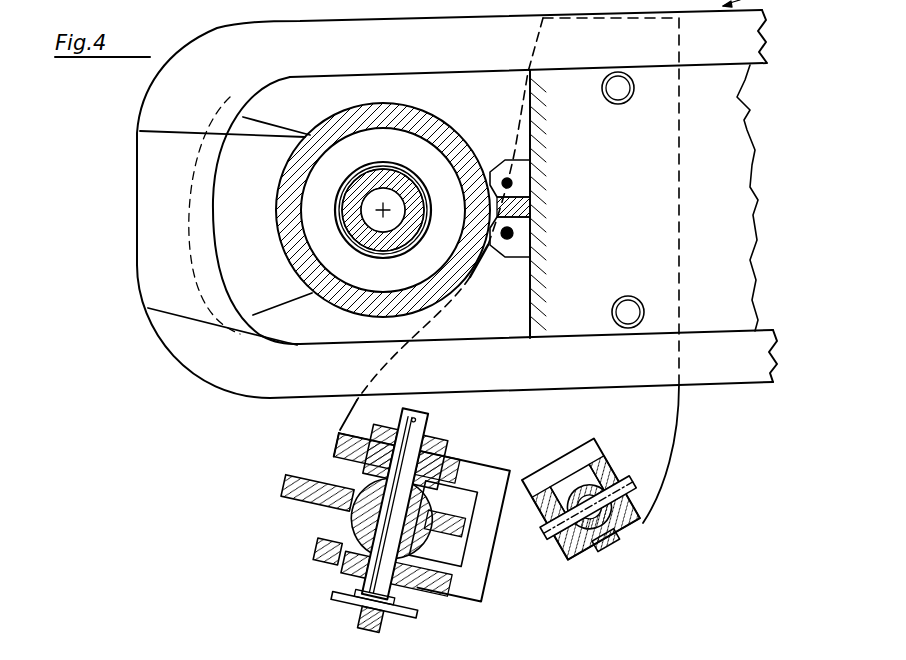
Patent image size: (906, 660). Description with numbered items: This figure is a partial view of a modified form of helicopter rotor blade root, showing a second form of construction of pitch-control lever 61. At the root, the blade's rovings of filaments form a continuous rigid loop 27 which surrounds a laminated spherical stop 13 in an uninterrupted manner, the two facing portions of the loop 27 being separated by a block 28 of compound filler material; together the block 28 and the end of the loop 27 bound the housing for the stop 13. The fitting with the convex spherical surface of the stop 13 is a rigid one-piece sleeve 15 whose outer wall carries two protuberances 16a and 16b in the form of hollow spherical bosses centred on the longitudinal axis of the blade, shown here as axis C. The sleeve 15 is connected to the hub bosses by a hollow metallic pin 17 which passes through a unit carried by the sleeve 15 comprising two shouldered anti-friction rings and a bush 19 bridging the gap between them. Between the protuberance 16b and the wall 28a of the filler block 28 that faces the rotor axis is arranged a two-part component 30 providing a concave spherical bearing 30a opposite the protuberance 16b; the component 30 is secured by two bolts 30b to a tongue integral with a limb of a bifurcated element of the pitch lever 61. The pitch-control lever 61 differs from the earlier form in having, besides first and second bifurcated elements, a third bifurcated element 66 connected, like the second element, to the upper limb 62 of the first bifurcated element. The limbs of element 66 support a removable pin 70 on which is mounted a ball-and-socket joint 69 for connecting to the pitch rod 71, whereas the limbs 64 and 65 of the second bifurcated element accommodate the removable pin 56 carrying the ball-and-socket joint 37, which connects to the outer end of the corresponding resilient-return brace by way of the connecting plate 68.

The laminated spherical stop 13 is at (286, 118).
The sleeve 15 is at (461, 130).
The protuberance 16a is at (290, 208).
The protuberance 16b is at (480, 198).
The hollow metallic pin 17 is at (390, 240).
The bush 19 is at (357, 237).
The axis C is at (399, 190).
The loop of rovings of filaments 27 is at (187, 352).
The block of filler material 28 is at (752, 215).
The wall of the filler block 28a is at (530, 278).
The two-part component 30 is at (522, 203).
The concave spherical bearing 30a is at (515, 187).
The bolts 30b is at (522, 240).
The upper limb of the first bifurcated element 62 is at (637, 253).
The pitch-control lever 61 is at (688, 396).
The third bifurcated element 66 is at (636, 481).
The limb of the second bifurcated element 64 is at (443, 457).
The limb of the second bifurcated element 65 is at (425, 582).
The connecting plate 68 is at (308, 478).
The ball-and-socket joint 37 is at (370, 520).
The removable pin 56 is at (373, 598).
The removable pin 70 is at (627, 490).
The ball-and-socket joint 69 is at (612, 522).
The pitch rod 71 is at (608, 545).